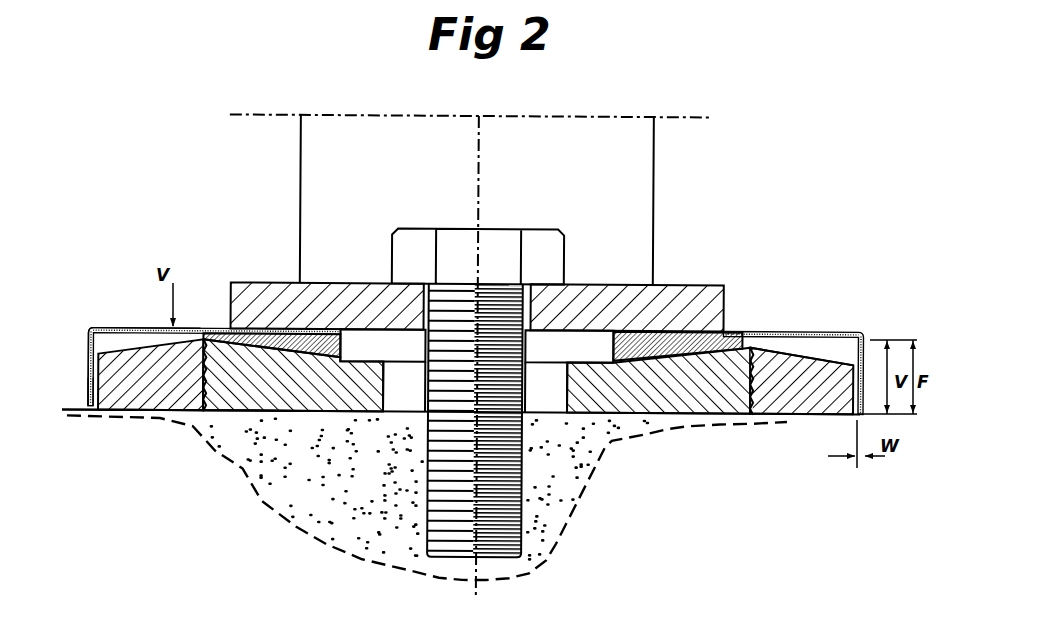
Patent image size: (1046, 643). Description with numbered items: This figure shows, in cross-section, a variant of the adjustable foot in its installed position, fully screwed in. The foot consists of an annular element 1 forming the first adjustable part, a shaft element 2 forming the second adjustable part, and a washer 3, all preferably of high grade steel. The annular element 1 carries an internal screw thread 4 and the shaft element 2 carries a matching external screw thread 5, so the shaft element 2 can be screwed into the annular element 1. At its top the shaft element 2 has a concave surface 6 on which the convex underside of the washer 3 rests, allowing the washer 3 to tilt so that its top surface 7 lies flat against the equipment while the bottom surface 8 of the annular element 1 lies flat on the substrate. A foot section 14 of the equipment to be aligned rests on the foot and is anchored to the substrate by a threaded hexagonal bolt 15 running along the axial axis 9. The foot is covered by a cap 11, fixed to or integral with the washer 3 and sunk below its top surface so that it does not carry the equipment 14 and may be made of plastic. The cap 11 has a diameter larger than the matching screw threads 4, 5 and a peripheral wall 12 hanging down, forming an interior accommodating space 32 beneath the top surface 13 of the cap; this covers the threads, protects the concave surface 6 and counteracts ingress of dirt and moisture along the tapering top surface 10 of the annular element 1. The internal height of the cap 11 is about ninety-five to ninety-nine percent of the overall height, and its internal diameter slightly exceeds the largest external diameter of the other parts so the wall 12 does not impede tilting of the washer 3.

The annular element 1 is at (780, 413).
The shaft element 2 is at (705, 413).
The washer 3 is at (643, 363).
The internal screw thread 4 is at (170, 412).
The external screw thread 5 is at (223, 410).
The concave surface 6 is at (368, 360).
The top surface 7 is at (223, 330).
The bottom surface 8 is at (137, 416).
The axial axis 9 is at (478, 238).
The tapering top surface 10 is at (130, 337).
The cap 11 is at (813, 333).
The peripheral wall 12 is at (73, 410).
The top surface of the cap 13 is at (103, 328).
The foot section of equipment 14 is at (687, 293).
The hexagonal bolt 15 is at (417, 253).
The interior accommodating space 32 is at (843, 350).